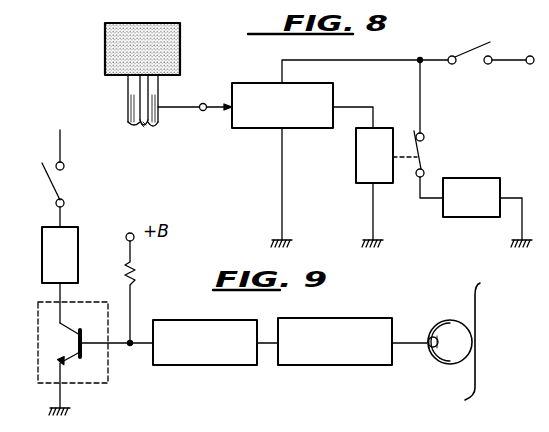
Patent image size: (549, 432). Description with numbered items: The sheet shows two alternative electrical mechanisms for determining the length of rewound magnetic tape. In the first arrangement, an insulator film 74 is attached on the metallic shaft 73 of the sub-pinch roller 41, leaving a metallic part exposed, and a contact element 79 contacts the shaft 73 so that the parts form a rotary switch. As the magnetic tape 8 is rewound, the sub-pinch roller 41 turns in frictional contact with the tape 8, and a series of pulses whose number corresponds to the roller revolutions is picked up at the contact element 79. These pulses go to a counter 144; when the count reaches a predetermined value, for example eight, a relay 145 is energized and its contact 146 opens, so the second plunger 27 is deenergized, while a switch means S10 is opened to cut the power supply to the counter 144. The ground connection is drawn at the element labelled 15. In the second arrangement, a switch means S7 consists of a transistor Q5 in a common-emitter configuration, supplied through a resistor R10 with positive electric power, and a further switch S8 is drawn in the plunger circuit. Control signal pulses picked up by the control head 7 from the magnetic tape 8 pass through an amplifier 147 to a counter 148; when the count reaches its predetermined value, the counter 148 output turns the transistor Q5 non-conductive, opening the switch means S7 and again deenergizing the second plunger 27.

In FIG. 8, the sub-pinch roller 41 is at (105, 48).
In FIG. 8, the metallic shaft 73 is at (128, 85).
In FIG. 8, the insulator film 74 is at (131, 114).
In FIG. 8, the contact element 79 is at (180, 110).
In FIG. 8, the counter 144 is at (267, 83).
In FIG. 8, the relay 145 is at (356, 153).
In FIG. 8, the contact 146 is at (425, 141).
In FIG. 8, the switch means S10 is at (473, 50).
In FIG. 8, the second plunger 27 is at (468, 217).
In FIG. 9, the second plunger 27 is at (69, 250).
In FIG. 8, the ground / element 15 is at (524, 222).
In FIG. 9, the switch S8 is at (63, 180).
In FIG. 9, the transistor Q5 is at (77, 357).
In FIG. 9, the switch means S7 is at (103, 365).
In FIG. 9, the resistor R10 is at (129, 270).
In FIG. 9, the counter 148 is at (207, 363).
In FIG. 9, the amplifier 147 is at (344, 363).
In FIG. 9, the control head 7 is at (442, 366).
In FIG. 9, the magnetic tape 8 is at (477, 375).